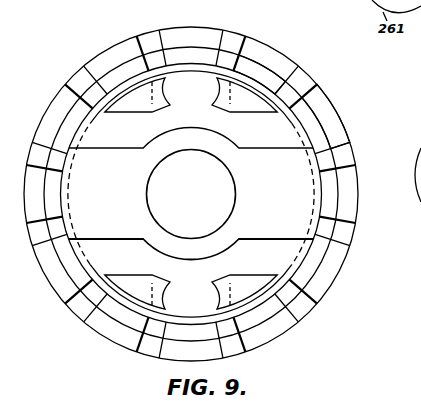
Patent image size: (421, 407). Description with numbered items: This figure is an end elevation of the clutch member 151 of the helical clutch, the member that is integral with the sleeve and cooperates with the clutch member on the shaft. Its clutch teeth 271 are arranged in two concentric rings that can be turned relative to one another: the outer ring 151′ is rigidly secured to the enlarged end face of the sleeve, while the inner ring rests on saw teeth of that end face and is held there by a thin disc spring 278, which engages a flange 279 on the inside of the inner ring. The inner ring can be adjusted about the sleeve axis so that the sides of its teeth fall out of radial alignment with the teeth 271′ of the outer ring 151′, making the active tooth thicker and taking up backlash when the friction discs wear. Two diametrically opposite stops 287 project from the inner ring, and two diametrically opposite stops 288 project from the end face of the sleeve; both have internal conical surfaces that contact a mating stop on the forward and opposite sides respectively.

The clutch member 151 is at (277, 332).
The outer ring 151′ is at (322, 107).
The clutch teeth 271 is at (325, 222).
The teeth of outer ring 271′ is at (302, 308).
The disc spring 278 is at (95, 147).
The flange 279 is at (302, 137).
The stop 287 is at (142, 98).
The stop 288 is at (232, 97).